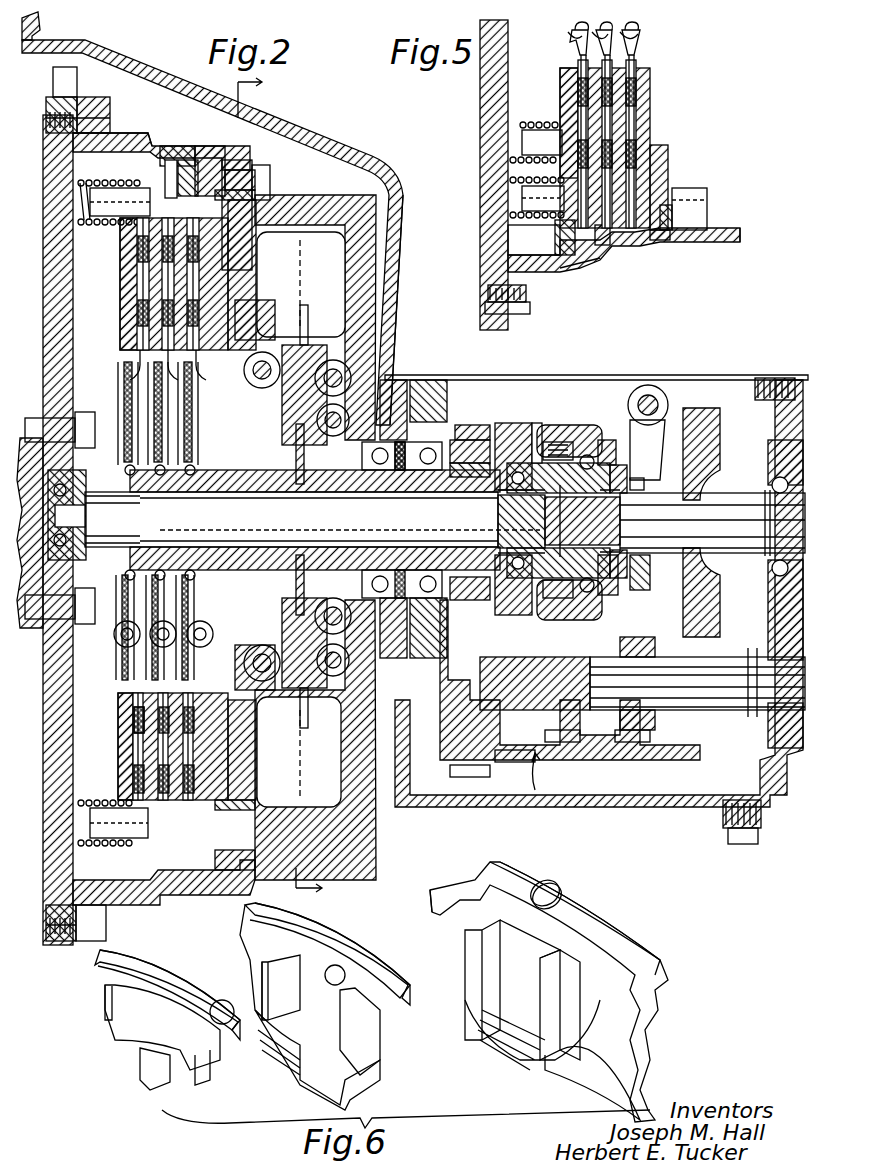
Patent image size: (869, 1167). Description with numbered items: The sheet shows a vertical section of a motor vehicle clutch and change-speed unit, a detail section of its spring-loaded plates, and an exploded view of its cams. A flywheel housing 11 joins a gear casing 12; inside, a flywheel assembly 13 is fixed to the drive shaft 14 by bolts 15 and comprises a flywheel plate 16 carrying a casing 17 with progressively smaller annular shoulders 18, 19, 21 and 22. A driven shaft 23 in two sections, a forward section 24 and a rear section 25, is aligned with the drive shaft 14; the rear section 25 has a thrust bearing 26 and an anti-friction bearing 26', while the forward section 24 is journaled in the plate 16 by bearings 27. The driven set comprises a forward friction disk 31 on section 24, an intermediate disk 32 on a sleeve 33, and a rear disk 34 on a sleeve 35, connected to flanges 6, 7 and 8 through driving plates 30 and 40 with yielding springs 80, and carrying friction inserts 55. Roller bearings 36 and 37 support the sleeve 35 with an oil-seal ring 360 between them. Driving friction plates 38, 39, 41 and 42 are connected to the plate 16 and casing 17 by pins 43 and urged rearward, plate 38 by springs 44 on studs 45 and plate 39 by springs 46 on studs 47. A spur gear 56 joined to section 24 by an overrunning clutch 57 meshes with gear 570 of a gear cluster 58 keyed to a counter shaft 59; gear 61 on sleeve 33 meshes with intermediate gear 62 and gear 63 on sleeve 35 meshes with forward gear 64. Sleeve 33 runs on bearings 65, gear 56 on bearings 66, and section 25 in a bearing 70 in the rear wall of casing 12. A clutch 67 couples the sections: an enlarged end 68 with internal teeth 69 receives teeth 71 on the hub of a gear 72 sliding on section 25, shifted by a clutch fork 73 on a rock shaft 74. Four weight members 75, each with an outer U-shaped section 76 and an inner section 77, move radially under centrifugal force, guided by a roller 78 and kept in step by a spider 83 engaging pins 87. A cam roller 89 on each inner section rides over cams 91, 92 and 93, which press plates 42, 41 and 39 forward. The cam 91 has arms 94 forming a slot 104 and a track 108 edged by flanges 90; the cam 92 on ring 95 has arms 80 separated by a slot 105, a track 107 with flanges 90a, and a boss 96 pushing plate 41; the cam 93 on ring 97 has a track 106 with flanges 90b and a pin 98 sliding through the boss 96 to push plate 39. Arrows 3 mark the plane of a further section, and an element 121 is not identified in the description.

In FIG. 2, the section line 3- 3 is at (287, 486).
In FIG. 2, the flange 6 is at (120, 450).
In FIG. 2, the flange 7 is at (175, 430).
In FIG. 2, the flange 8 is at (212, 450).
In FIG. 2, the flywheel housing 11 is at (128, 58).
In FIG. 2, the gear casing 12 is at (436, 375).
In FIG. 2, the flywheel assembly 13 is at (125, 130).
In FIG. 5, the flywheel assembly 13 is at (594, 270).
In FIG. 2, the drive shaft 14 is at (25, 630).
In FIG. 2, the bolts 15 is at (40, 415).
In FIG. 2, the flywheel plate 16 is at (43, 262).
In FIG. 5, the flywheel plate 16 is at (480, 86).
In FIG. 2, the casing 17 is at (385, 175).
In FIG. 5, the casing 17 is at (740, 242).
In FIG. 2, the annular shoulder 18 is at (142, 142).
In FIG. 5, the annular shoulder 18 is at (568, 272).
In FIG. 2, the annular shoulder 19 is at (166, 150).
In FIG. 5, the annular shoulder 19 is at (580, 256).
In FIG. 2, the annular shoulder 21 is at (206, 160).
In FIG. 5, the annular shoulder 21 is at (615, 260).
In FIG. 2, the annular shoulder 22 is at (248, 178).
In FIG. 5, the annular shoulder 22 is at (665, 242).
In FIG. 2, the driven shaft 23 is at (512, 425).
In FIG. 2, the forward section 24 is at (484, 440).
In FIG. 2, the rear section 25 is at (733, 492).
In FIG. 2, the thrust bearing 26 is at (506, 521).
In FIG. 2, the anti-friction bearing 26' is at (582, 521).
In FIG. 2, the anti-friction bearings 27 is at (75, 486).
In FIG. 5, the driving plates 30 is at (620, 30).
In FIG. 2, the forward friction disk 31 is at (196, 360).
In FIG. 5, the forward friction disk 31 is at (582, 62).
In FIG. 2, the intermediate friction disk 32 is at (168, 352).
In FIG. 5, the intermediate friction disk 32 is at (612, 62).
In FIG. 2, the sleeve 33 is at (218, 488).
In FIG. 2, the rear friction disk 34 is at (140, 340).
In FIG. 5, the rear friction disk 34 is at (636, 68).
In FIG. 2, the sleeve 35 is at (340, 490).
In FIG. 2, the roller bearing 36 is at (380, 440).
In FIG. 2, the roller bearing 37 is at (455, 440).
In FIG. 2, the friction plate 38 is at (122, 250).
In FIG. 5, the friction plate 38 is at (560, 86).
In FIG. 2, the friction plate 39 is at (150, 262).
In FIG. 5, the friction plate 39 is at (580, 72).
In FIG. 5, the driving plates 40 is at (640, 35).
In FIG. 2, the friction plate 41 is at (170, 276).
In FIG. 5, the friction plate 41 is at (636, 117).
In FIG. 2, the friction plate 42 is at (200, 288).
In FIG. 5, the friction plate 42 is at (650, 90).
In FIG. 6, the friction plate 42 is at (608, 880).
In FIG. 5, the pins 43 is at (510, 236).
In FIG. 5, the springs 44 is at (528, 122).
In FIG. 5, the studs 45 is at (522, 140).
In FIG. 2, the springs 46 is at (92, 174).
In FIG. 5, the springs 46 is at (515, 176).
In FIG. 2, the studs 47 is at (90, 198).
In FIG. 5, the studs 47 is at (522, 196).
In FIG. 2, the friction material inserts 55 is at (134, 722).
In FIG. 5, the friction material inserts 55 is at (636, 96).
In FIG. 2, the spur gear 56 is at (575, 410).
In FIG. 2, the overrunning clutch 57 is at (560, 440).
In FIG. 2, the gear cluster 58 is at (540, 790).
In FIG. 2, the counter shaft 59 is at (712, 710).
In FIG. 2, the gear 61 is at (522, 460).
In FIG. 2, the intermediate gear 62 is at (510, 760).
In FIG. 2, the gear 63 is at (470, 425).
In FIG. 2, the forward gear 64 is at (468, 770).
In FIG. 2, the anti-friction bearings 65 is at (542, 430).
In FIG. 2, the anti-friction bearings 66 is at (590, 430).
In FIG. 2, the clutch 67 is at (610, 452).
In FIG. 2, the enlarged end 68 is at (610, 580).
In FIG. 2, the internal clutch teeth 69 is at (624, 470).
In FIG. 2, the antifriction bearing 70 is at (768, 588).
In FIG. 2, the clutch teeth 71 is at (640, 590).
In FIG. 2, the gear 72 is at (700, 420).
In FIG. 2, the clutch fork 73 is at (668, 400).
In FIG. 2, the rock shaft 74 is at (648, 384).
In FIG. 2, the weight members 75 is at (348, 255).
In FIG. 2, the outer U-shaped section 76 is at (333, 236).
In FIG. 2, the inner section 77 is at (305, 350).
In FIG. 2, the anti-friction guide roller 78 is at (352, 400).
In FIG. 2, the arms of cam 92 80 is at (114, 636).
In FIG. 6, the arms of cam 92 80 is at (365, 985).
In FIG. 2, the spider member 83 is at (290, 484).
In FIG. 2, the pin 87 is at (322, 490).
In FIG. 2, the cam operating roller 89 is at (268, 355).
In FIG. 6, the flange 90 is at (475, 1030).
In FIG. 6, the flanges 90a is at (266, 1020).
In FIG. 6, the flanges 90b is at (108, 1020).
In FIG. 2, the cam member 91 is at (256, 312).
In FIG. 6, the cam member 91 is at (505, 1050).
In FIG. 2, the cam 92 is at (250, 282).
In FIG. 6, the cam 92 is at (300, 1070).
In FIG. 2, the cam member 93 is at (252, 222).
In FIG. 6, the cam member 93 is at (160, 1078).
In FIG. 6, the cam arms 94 is at (600, 990).
In FIG. 2, the annular member 95 is at (230, 165).
In FIG. 5, the annular member 95 is at (668, 152).
In FIG. 6, the annular member 95 is at (360, 938).
In FIG. 2, the boss 96 is at (200, 160).
In FIG. 2, the annular member 97 is at (262, 180).
In FIG. 5, the annular member 97 is at (672, 190).
In FIG. 6, the annular member 97 is at (148, 978).
In FIG. 2, the pin 98 is at (172, 160).
In FIG. 6, the pin 98 is at (215, 1003).
In FIG. 6, the slot 104 is at (620, 895).
In FIG. 6, the slot 105 is at (318, 945).
In FIG. 6, the track 106 is at (130, 1035).
In FIG. 6, the track 107 is at (262, 970).
In FIG. 6, the cam track 108 is at (440, 870).
In FIG. 2, the rib 121 is at (643, 740).
In FIG. 2, the oil seal ring 360 is at (398, 488).
In FIG. 2, the gear 570 is at (568, 740).